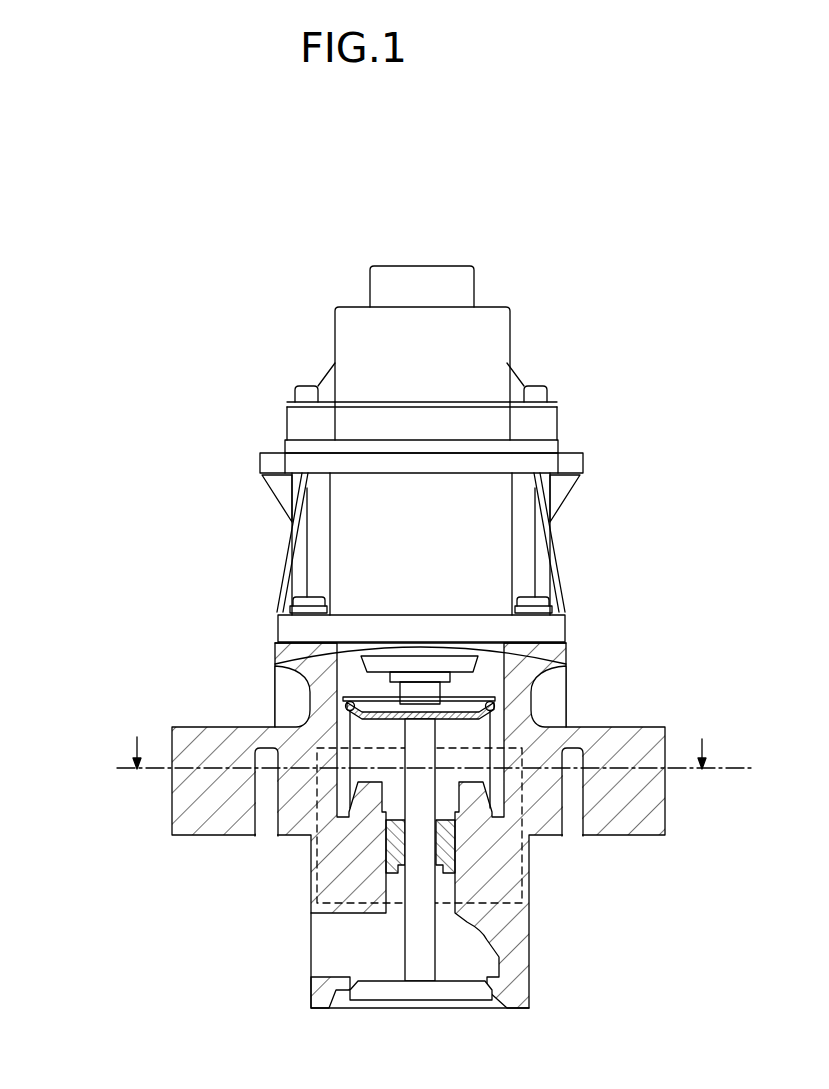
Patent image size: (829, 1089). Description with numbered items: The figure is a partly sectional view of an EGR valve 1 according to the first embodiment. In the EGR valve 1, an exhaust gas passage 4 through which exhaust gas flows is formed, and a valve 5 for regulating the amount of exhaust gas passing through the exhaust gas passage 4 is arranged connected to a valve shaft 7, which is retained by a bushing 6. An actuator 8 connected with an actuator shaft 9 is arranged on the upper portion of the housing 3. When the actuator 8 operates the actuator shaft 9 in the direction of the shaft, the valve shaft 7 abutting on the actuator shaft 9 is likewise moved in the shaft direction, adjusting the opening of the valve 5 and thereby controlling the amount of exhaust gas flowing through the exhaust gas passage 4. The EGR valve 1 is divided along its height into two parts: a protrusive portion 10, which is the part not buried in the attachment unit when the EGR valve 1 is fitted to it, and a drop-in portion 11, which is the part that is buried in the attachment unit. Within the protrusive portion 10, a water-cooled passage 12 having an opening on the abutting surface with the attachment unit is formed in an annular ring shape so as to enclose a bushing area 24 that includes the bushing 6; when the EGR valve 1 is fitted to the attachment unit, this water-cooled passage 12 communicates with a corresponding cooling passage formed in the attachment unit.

The EGR valve 1 is at (232, 243).
The protrusive portion 10 is at (92, 268).
The drop-in portion 11 is at (92, 835).
The actuator 8 is at (368, 350).
The housing 3 is at (567, 667).
The actuator shaft 9 is at (418, 692).
The water-cooled passage 12 is at (572, 755).
The bushing area 24 is at (522, 868).
The bushing 6 is at (395, 857).
The valve shaft 7 is at (415, 942).
The exhaust gas passage 4 is at (343, 960).
The valve 5 is at (383, 997).